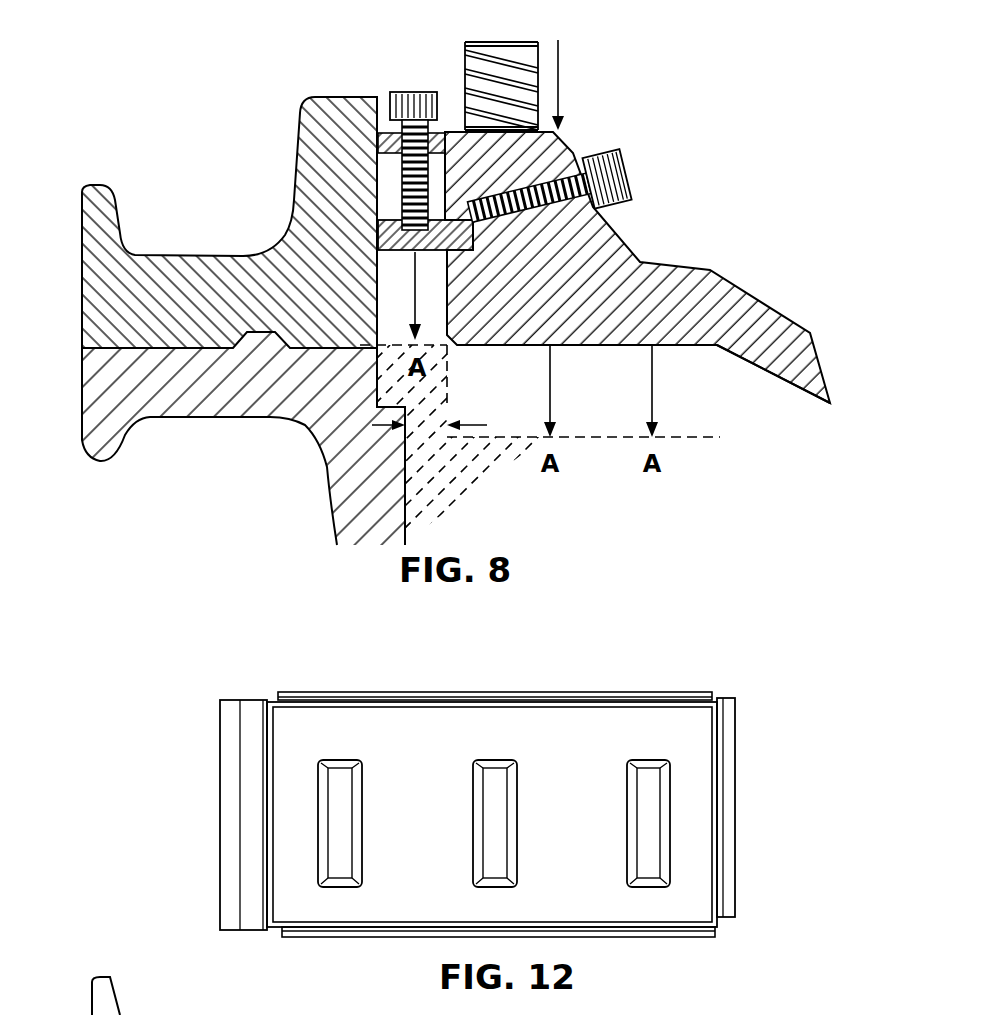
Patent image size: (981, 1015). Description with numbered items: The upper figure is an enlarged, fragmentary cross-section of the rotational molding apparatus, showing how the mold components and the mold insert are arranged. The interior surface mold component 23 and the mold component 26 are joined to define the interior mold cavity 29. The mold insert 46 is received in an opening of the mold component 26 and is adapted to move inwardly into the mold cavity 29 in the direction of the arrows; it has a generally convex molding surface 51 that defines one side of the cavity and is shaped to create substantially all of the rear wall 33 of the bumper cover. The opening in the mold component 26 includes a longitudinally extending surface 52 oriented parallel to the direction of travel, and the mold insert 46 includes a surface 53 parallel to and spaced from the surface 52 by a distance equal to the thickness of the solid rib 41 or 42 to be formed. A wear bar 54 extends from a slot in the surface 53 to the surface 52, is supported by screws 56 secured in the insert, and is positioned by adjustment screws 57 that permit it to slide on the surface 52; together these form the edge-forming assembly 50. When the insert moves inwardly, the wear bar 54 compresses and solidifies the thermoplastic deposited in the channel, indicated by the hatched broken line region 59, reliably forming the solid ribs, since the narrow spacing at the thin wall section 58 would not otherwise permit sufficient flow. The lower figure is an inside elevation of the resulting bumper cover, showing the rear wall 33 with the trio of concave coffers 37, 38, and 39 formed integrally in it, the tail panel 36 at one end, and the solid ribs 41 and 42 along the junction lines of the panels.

In FIG. 8, the mold component 26 is at (93, 183).
In FIG. 8, the wear bar 54 is at (290, 173).
In FIG. 8, the surface 53 is at (447, 283).
In FIG. 8, the longitudinally extending surface 52 is at (385, 318).
In FIG. 8, the interior surface mold component 23 is at (153, 417).
In FIG. 8, the solid rib 41 is at (377, 385).
In FIG. 12, the solid rib 41 is at (637, 933).
In FIG. 8, the screw 56 is at (397, 92).
In FIG. 8, the edge-forming assembly 50 is at (622, 103).
In FIG. 8, the adjustment screw 57 is at (627, 165).
In FIG. 8, the mold insert 46 is at (738, 282).
In FIG. 8, the molding surface 51 is at (812, 393).
In FIG. 8, the thin wall section 58 is at (448, 422).
In FIG. 8, the phantom slot 59 is at (407, 487).
In FIG. 8, the mold cavity 29 is at (678, 501).
In FIG. 12, the solid rib 42 is at (327, 692).
In FIG. 12, the concave coffer 38 is at (493, 778).
In FIG. 12, the concave coffer 39 is at (648, 775).
In FIG. 12, the tail panel 36 is at (220, 843).
In FIG. 12, the concave coffer 37 is at (335, 870).
In FIG. 12, the rear wall 33 is at (680, 895).